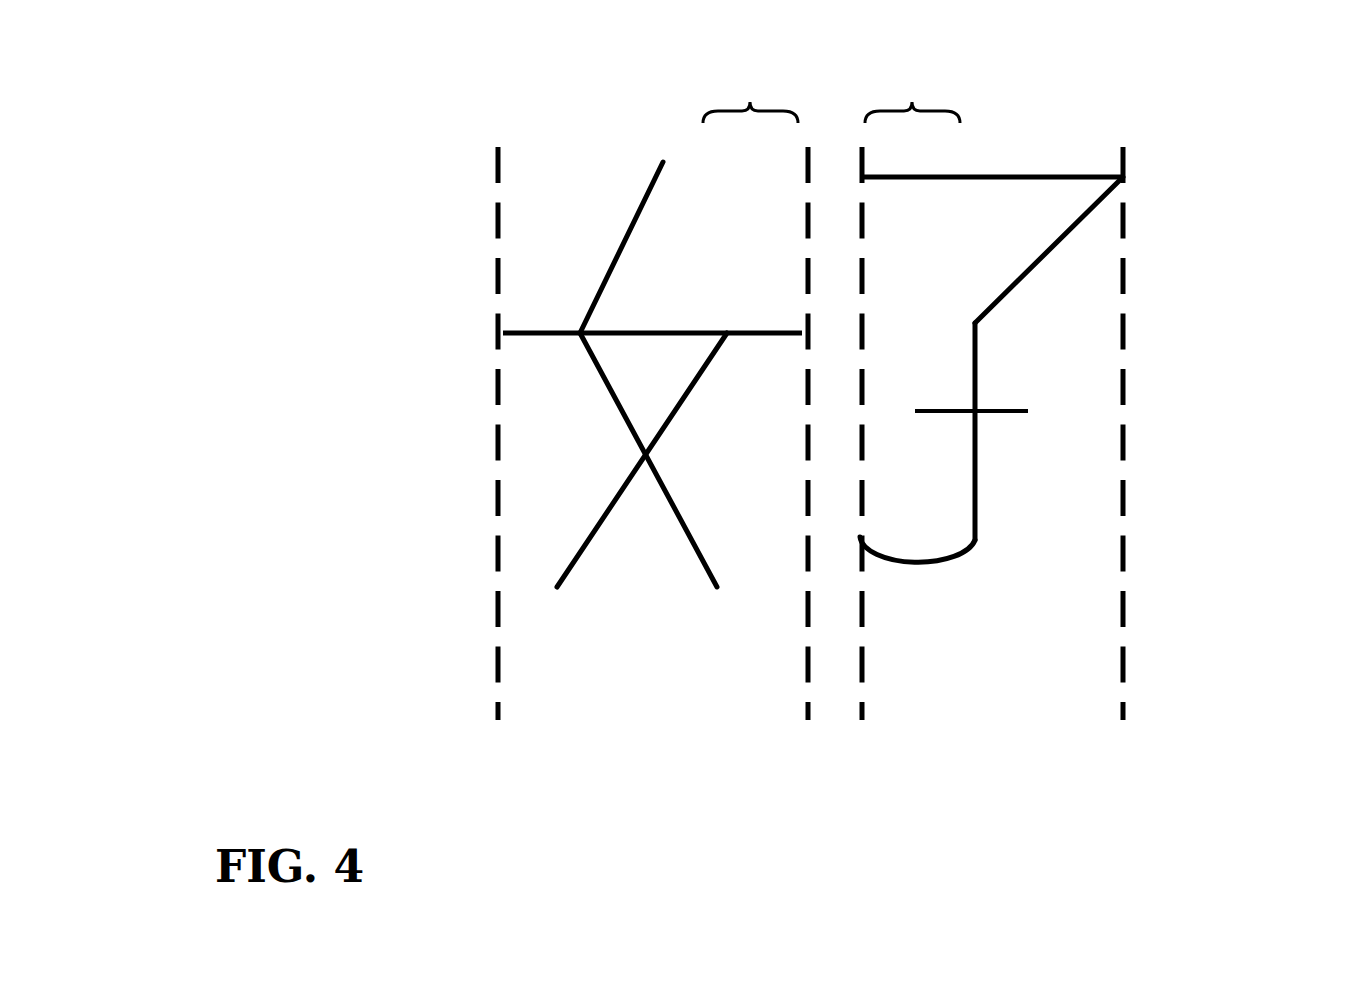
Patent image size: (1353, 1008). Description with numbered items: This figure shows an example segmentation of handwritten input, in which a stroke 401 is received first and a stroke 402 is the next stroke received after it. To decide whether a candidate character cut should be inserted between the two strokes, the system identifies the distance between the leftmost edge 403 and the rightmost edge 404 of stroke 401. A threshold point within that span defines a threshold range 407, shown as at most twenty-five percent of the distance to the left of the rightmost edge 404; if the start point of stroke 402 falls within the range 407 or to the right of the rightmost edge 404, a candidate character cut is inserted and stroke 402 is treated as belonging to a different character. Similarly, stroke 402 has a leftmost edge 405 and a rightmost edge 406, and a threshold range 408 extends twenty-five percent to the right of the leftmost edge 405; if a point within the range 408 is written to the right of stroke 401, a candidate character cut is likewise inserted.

The stroke 401 is at (780, 330).
The stroke 402 is at (1045, 173).
The leftmost edge 403 is at (495, 452).
The rightmost edge 404 is at (800, 452).
The leftmost edge 405 is at (866, 452).
The rightmost edge 406 is at (1133, 449).
The threshold range 407 is at (750, 98).
The threshold range 408 is at (912, 98).